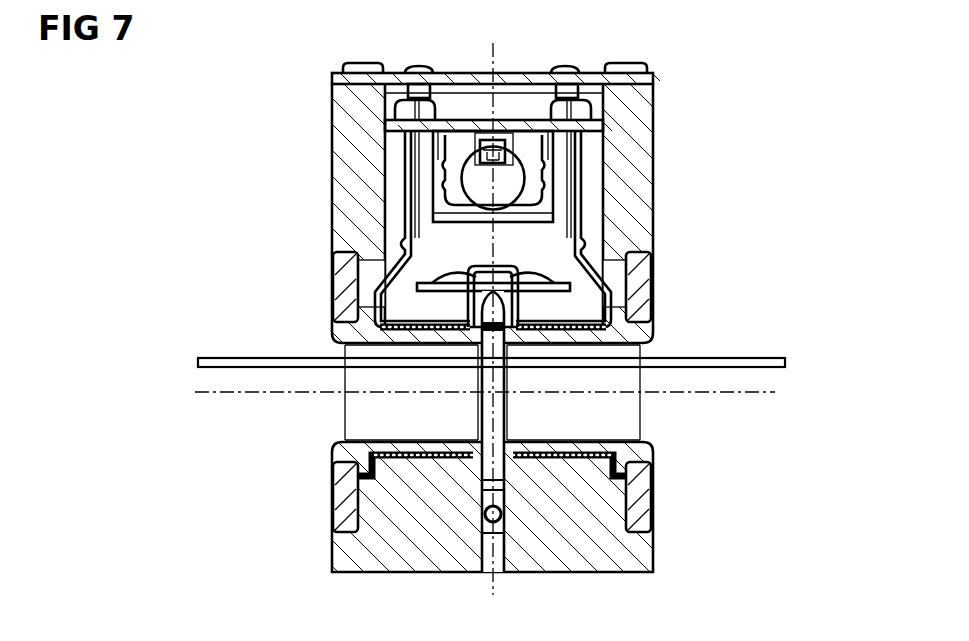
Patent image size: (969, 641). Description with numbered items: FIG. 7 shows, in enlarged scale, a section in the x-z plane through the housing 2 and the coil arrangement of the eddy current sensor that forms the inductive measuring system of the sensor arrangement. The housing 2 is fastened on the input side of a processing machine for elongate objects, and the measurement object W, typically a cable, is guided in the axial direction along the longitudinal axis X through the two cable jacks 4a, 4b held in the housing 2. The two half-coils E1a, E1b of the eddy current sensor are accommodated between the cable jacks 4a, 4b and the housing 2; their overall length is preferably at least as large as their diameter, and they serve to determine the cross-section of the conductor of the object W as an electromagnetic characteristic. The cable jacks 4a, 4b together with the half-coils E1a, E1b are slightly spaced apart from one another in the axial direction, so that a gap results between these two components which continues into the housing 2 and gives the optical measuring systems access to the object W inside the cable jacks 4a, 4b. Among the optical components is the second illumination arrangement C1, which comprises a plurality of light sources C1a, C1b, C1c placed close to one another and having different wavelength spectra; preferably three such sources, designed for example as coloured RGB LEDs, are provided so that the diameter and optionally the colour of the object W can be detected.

The half-coil E1a is at (575, 162).
The half-coil E1b is at (415, 162).
The second illumination arrangement C1 is at (337, 235).
The light source C1a is at (467, 166).
The light source C1b is at (369, 219).
The light source C1c is at (187, 237).
The measurement object W is at (300, 363).
The longitudinal axis X is at (655, 392).
The cable jack 4a is at (618, 410).
The cable jack 4b is at (357, 412).
The housing 2 is at (572, 525).